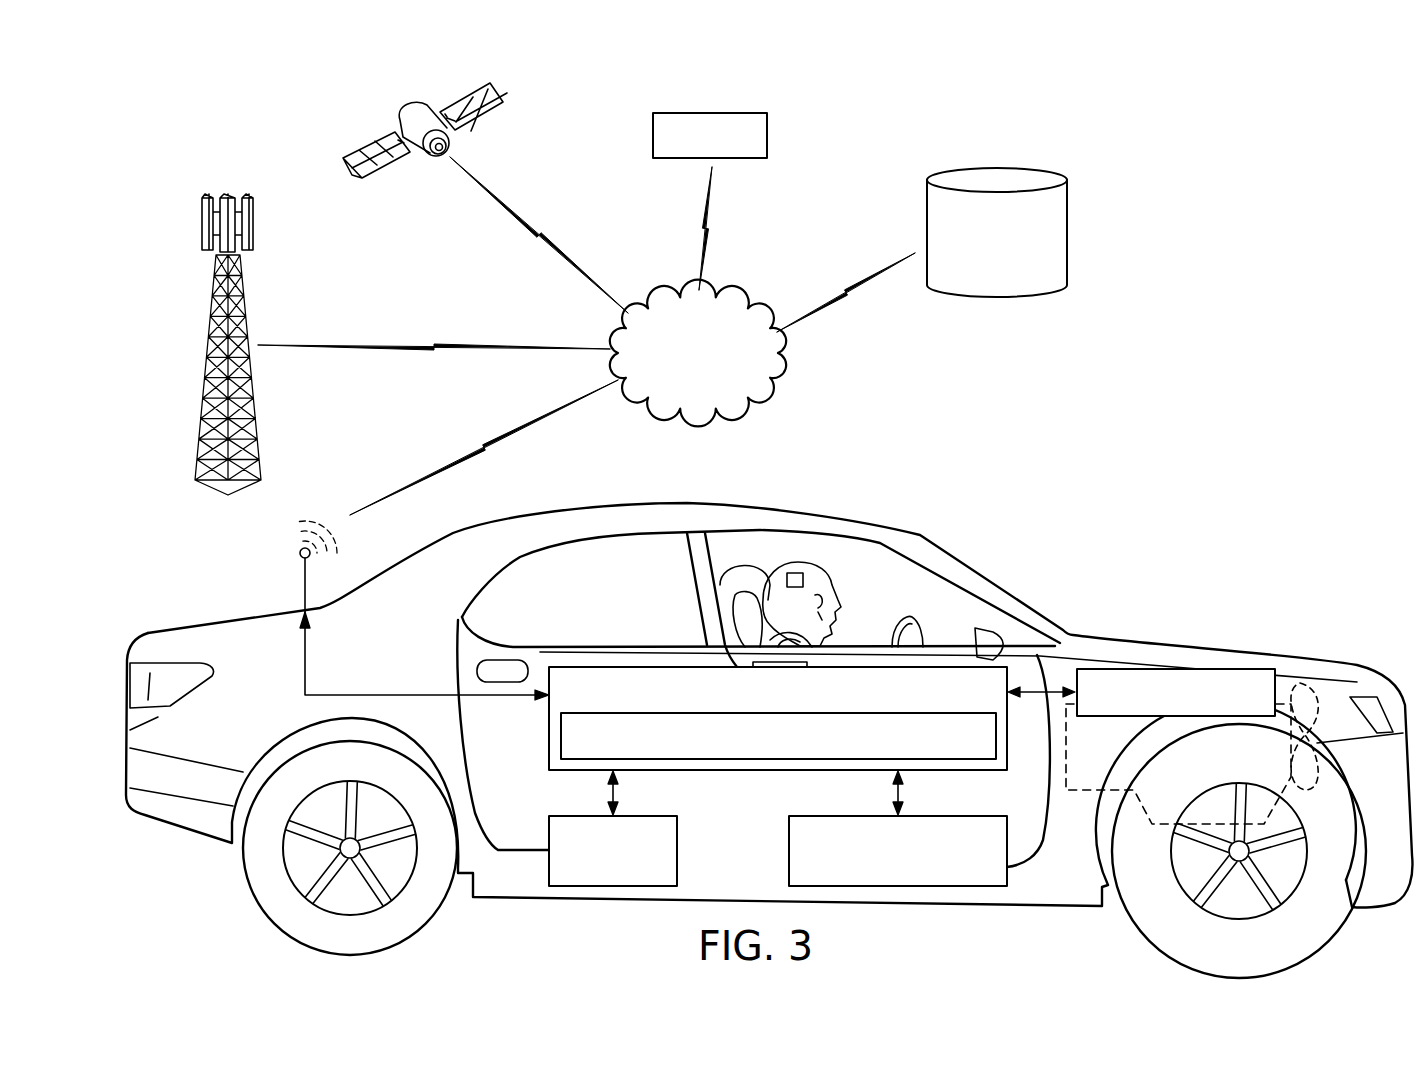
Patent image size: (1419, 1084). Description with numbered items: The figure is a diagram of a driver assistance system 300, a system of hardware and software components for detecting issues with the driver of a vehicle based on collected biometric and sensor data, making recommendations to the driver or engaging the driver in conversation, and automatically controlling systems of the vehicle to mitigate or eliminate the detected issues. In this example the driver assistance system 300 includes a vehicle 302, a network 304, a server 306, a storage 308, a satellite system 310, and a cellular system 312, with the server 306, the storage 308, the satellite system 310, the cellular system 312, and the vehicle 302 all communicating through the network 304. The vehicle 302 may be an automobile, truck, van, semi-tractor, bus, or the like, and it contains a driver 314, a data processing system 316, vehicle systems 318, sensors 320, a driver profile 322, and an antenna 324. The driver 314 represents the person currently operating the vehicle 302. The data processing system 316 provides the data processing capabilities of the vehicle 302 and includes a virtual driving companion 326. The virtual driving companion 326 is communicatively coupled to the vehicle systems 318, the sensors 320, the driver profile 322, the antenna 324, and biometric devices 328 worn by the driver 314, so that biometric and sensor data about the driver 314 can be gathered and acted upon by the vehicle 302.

The driver assistance system 300 is at (1220, 168).
The vehicle 302 is at (968, 552).
The network 304 is at (660, 298).
The server 306 is at (653, 135).
The storage 308 is at (1017, 275).
The satellite system 310 is at (398, 121).
The cellular system 312 is at (202, 222).
The driver 314 is at (720, 577).
The data processing system 316 is at (983, 705).
The vehicle systems 318 is at (1010, 870).
The sensors 320 is at (1175, 668).
The driver profile 322 is at (678, 840).
The antenna 324 is at (300, 553).
The virtual driving companion 326 is at (985, 748).
The biometric devices 328 is at (797, 572).